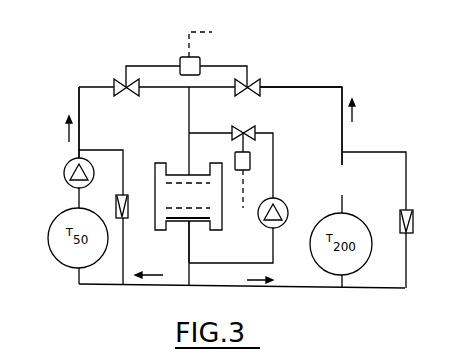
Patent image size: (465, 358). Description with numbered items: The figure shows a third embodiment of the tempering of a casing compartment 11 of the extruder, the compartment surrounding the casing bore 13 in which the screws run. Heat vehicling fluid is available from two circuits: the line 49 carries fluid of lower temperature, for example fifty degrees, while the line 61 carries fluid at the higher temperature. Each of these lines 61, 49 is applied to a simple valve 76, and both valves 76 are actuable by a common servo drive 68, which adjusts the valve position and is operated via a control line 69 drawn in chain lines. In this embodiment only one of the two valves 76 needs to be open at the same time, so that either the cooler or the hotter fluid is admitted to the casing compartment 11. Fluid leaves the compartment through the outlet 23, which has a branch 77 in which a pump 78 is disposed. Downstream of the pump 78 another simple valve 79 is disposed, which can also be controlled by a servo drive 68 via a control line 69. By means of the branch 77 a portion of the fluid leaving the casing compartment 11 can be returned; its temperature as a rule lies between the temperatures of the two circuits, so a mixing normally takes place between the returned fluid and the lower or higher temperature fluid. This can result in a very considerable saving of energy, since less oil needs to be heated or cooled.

The casing compartment 11 is at (163, 163).
The casing bore 13 is at (158, 197).
The outlet 23 is at (189, 245).
The line 49 is at (79, 98).
The line 61 is at (311, 86).
The servo drive 68 is at (180, 57).
The control line 69 is at (218, 32).
The simple valve 76 is at (122, 80).
The branch 77 is at (236, 263).
The pump 78 is at (285, 205).
The simple valve 79 is at (254, 130).